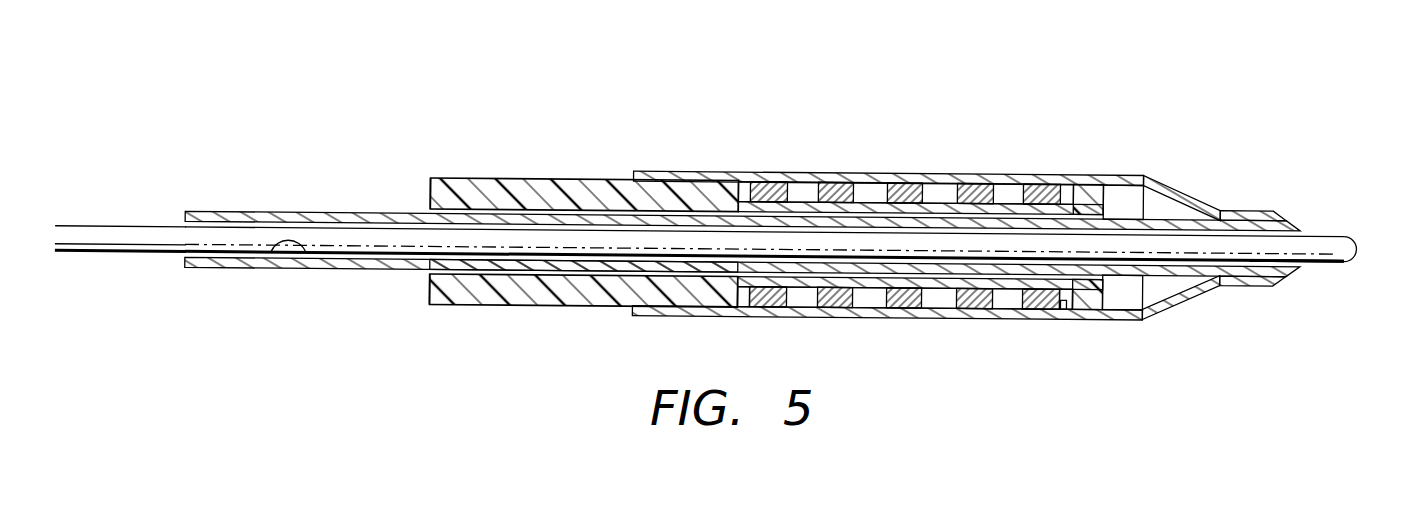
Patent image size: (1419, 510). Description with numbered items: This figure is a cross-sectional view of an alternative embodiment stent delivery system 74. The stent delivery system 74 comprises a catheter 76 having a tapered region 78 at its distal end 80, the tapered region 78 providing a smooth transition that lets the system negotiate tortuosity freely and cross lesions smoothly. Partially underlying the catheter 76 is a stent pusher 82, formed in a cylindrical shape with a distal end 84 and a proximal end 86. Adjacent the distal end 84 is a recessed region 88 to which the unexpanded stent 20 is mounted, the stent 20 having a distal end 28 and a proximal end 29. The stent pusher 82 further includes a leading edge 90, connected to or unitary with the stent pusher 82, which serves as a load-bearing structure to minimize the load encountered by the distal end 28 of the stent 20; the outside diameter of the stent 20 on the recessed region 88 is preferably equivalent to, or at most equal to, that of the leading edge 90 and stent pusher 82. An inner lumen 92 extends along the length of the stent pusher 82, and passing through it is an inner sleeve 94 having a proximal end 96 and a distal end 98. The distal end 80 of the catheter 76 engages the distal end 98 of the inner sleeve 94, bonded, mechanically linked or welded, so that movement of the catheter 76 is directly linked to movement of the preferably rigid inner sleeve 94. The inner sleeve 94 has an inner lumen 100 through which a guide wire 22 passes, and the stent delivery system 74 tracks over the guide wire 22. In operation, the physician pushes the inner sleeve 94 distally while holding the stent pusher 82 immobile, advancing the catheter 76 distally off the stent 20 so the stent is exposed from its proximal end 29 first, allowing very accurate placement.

The stent delivery system 74 is at (424, 122).
The guide wire 22 is at (1327, 236).
The proximal end 96 is at (187, 269).
The distal end 98 is at (1298, 262).
The inner sleeve 94 is at (233, 212).
The inner lumen 92 is at (503, 272).
The inner lumen 100 is at (303, 268).
The stent pusher 82 is at (502, 179).
The proximal end 86 is at (427, 288).
The unexpanded stent 20 is at (840, 175).
The catheter 76 is at (942, 172).
The recessed region 88 is at (940, 288).
The proximal end 29 is at (747, 290).
The distal end 28 is at (1063, 300).
The leading edge 90 is at (1085, 178).
The distal end 84 is at (1093, 299).
The tapered region 78 is at (1175, 188).
The distal end 80 is at (1260, 210).